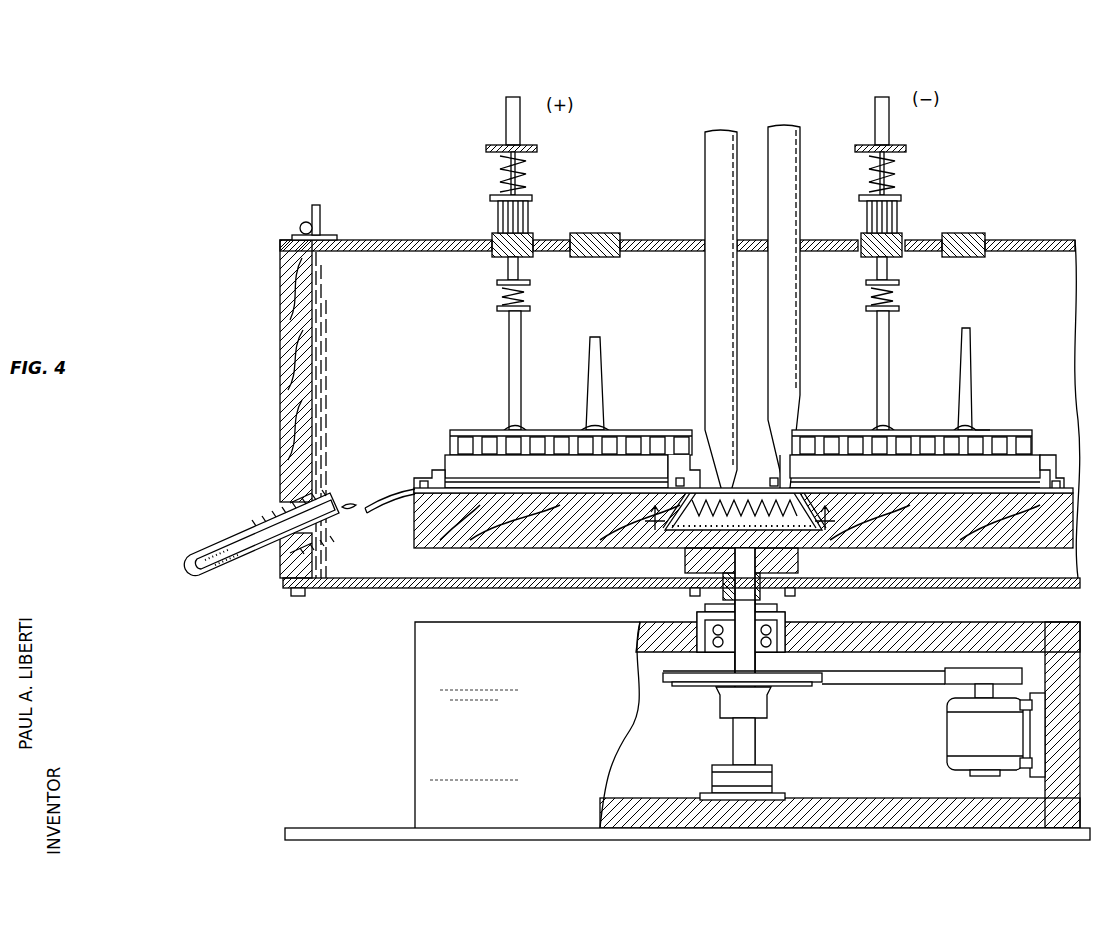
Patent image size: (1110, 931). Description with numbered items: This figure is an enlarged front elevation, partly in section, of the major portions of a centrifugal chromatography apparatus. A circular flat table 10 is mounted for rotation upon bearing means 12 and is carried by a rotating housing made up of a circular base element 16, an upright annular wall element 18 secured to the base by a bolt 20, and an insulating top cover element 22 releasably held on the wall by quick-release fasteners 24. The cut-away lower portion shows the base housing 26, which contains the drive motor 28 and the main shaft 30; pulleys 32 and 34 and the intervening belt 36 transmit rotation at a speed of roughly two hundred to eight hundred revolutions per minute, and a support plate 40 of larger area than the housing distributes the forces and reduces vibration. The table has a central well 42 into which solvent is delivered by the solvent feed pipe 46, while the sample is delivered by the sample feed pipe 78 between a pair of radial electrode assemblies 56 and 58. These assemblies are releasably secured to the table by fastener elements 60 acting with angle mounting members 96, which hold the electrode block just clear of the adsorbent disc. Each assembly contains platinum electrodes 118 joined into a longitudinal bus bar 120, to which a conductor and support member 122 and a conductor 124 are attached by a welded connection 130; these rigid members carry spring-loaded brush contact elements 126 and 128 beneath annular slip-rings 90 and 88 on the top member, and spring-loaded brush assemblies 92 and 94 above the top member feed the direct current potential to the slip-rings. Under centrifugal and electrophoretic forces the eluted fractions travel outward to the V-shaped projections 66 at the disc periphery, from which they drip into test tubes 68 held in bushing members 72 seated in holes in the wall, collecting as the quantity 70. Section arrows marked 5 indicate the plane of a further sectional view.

The section line indicator 5 is at (740, 526).
The circular flat table 10 is at (1045, 540).
The bearing means 12 is at (780, 632).
The circular base element 16 is at (361, 590).
The annular wall element 18 is at (292, 378).
The bolt 20 is at (296, 598).
The top cover element 22 is at (417, 240).
The quick-release fasteners 24 is at (302, 222).
The base housing 26 is at (425, 695).
The drive motor 28 is at (946, 740).
The main shaft 30 is at (754, 748).
The pulley 32 is at (945, 683).
The pulley 34 is at (765, 702).
The belt 36 is at (866, 682).
The support plate 40 is at (360, 830).
The central well 42 is at (745, 492).
The solvent feed pipe 46 is at (716, 178).
The electrode assembly 56 is at (619, 418).
The electrode assembly 58 is at (988, 422).
The fastener elements 60 is at (1057, 470).
The V-shaped projections 66 is at (386, 494).
The test tube 68 is at (245, 530).
The quantity 70 is at (218, 566).
The bushing member 72 is at (278, 510).
The sample feed pipe 78 is at (790, 158).
The slip-ring 88 is at (962, 235).
The slip-ring 90 is at (592, 235).
The spring-loaded brush assembly 92 is at (902, 196).
The spring-loaded brush assembly 94 is at (497, 197).
The angle mounting members 96 is at (432, 469).
The platinum electrode 118 is at (1030, 440).
The bus bar 120 is at (914, 430).
The conductor and support member 122 is at (890, 355).
The conductor 124 is at (508, 356).
The spring-loaded brush contact element 126 is at (898, 282).
The spring-loaded brush contact assembly 128 is at (528, 287).
The welded connection 130 is at (508, 428).